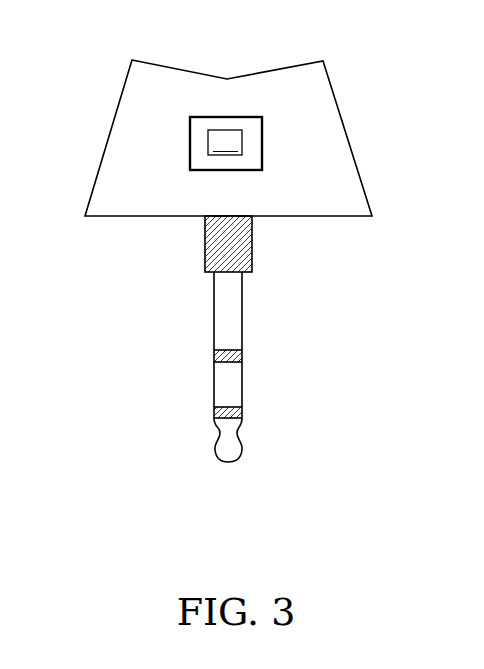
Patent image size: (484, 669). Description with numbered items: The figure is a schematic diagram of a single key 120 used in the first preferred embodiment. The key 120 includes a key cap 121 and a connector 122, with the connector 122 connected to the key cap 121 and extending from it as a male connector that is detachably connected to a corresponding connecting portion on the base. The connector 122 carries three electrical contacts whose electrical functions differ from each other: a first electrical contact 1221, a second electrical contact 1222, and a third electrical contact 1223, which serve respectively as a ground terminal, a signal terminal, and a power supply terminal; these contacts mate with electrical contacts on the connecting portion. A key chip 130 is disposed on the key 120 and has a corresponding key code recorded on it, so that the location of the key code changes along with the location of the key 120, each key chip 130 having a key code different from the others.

The key 120 is at (100, 47).
The key cap 121 is at (338, 146).
The key chip 130 is at (262, 131).
The connector 122 is at (318, 302).
The first electrical contact 1221 is at (228, 312).
The second electrical contact 1222 is at (228, 385).
The third electrical contact 1223 is at (228, 440).